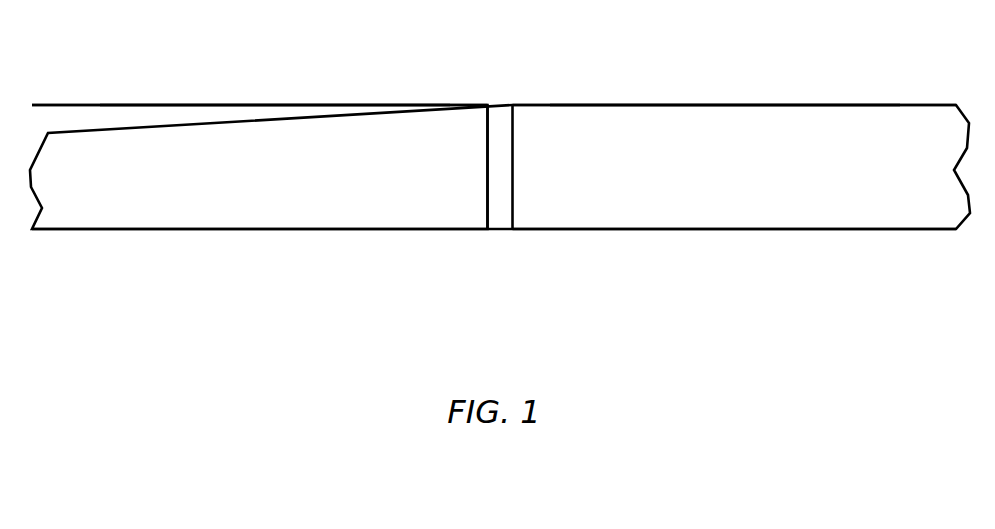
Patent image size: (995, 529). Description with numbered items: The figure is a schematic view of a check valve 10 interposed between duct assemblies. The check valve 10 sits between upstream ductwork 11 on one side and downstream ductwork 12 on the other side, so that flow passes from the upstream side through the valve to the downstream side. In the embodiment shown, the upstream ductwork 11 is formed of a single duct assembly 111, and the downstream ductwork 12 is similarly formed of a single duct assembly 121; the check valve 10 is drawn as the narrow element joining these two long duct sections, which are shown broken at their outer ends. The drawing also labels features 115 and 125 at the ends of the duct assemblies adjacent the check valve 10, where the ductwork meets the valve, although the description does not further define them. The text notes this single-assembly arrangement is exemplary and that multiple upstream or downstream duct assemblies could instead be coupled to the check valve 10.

The check valve 10 is at (500, 234).
The upstream ductwork 11 is at (753, 233).
The downstream ductwork 12 is at (223, 233).
The duct assembly 111 is at (710, 105).
The duct assembly 121 is at (273, 105).
The end face of first portion 115 is at (524, 207).
The end face of second portion 125 is at (476, 194).